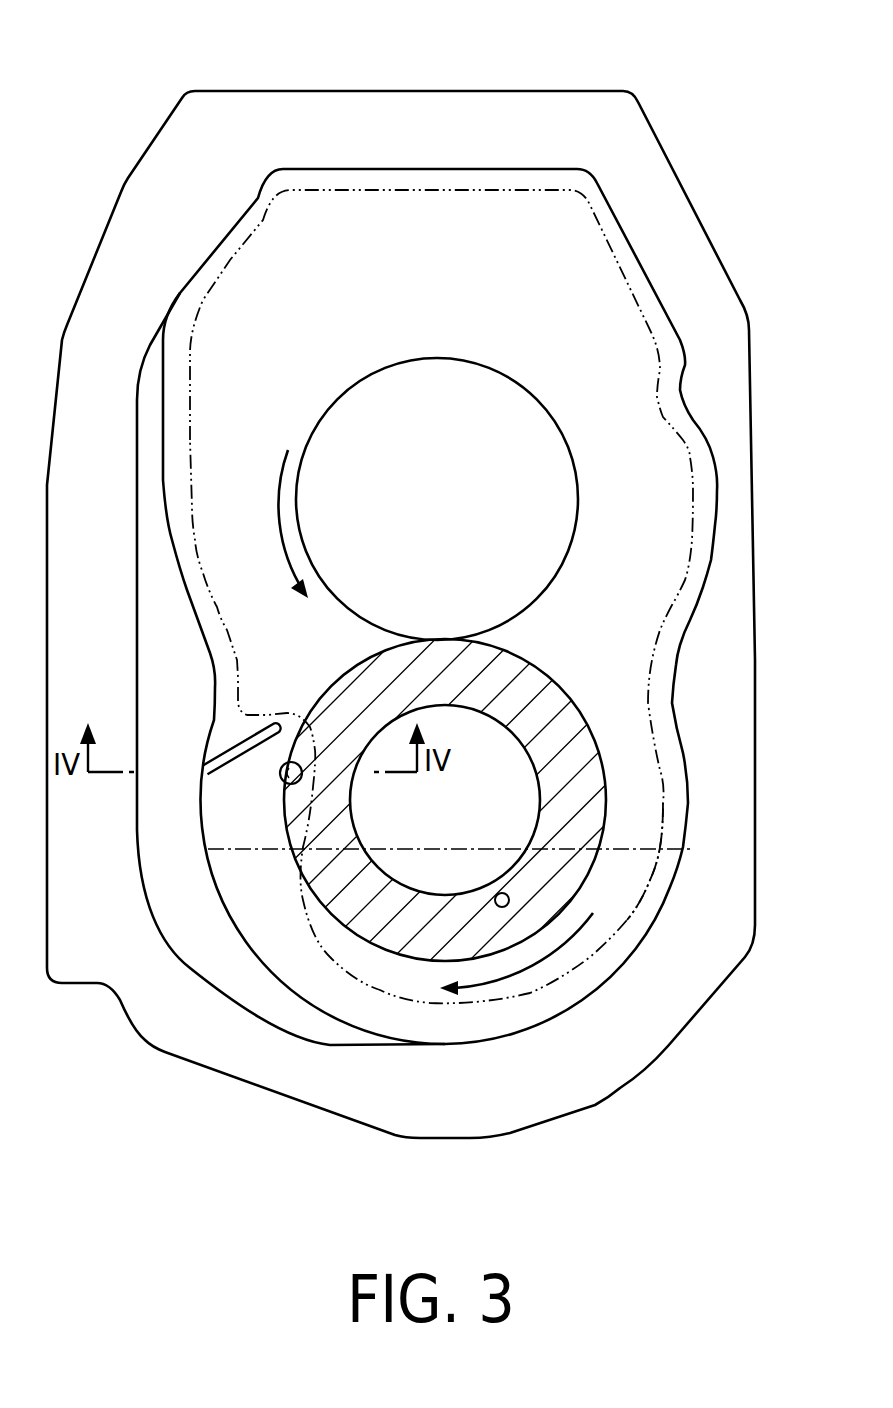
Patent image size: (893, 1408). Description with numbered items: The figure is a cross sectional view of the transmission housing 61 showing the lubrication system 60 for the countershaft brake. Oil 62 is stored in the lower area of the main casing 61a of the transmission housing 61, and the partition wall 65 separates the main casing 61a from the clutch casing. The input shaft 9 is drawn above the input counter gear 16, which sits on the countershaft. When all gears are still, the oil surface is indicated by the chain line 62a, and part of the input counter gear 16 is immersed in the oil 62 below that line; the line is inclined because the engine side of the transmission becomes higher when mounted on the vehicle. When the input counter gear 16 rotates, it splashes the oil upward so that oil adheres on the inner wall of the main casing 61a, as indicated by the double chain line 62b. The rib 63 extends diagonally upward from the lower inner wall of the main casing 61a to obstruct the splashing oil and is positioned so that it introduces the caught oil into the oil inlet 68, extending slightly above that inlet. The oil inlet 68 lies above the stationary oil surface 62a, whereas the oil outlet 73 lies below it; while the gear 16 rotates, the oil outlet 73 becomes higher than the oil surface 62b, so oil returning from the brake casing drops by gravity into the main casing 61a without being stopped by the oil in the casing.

The transmission housing 61 is at (545, 75).
The main housing 61a is at (687, 623).
The oil pool 62 is at (287, 913).
The oil surface 62a is at (642, 847).
The oil surface when gears rotate 62b is at (692, 528).
The partition wall 65 is at (452, 317).
The input shaft 9 is at (452, 521).
The input counter gear 16 is at (552, 684).
The lubrication system 60 is at (248, 588).
The rib 63 is at (240, 748).
The oil inlet 68 is at (282, 777).
The oil outlet 73 is at (508, 897).